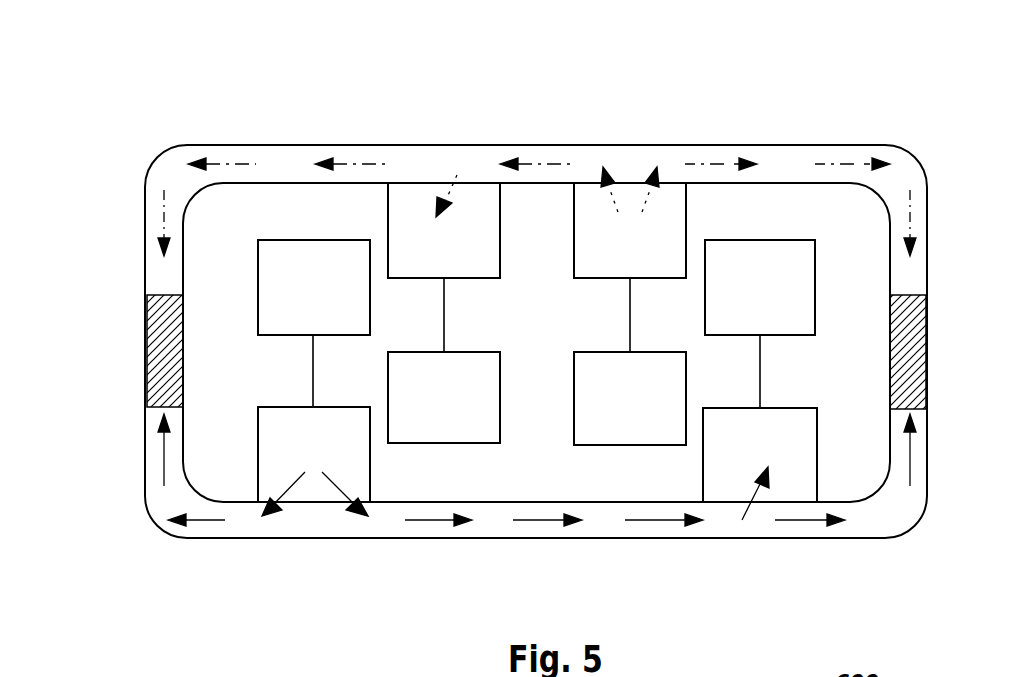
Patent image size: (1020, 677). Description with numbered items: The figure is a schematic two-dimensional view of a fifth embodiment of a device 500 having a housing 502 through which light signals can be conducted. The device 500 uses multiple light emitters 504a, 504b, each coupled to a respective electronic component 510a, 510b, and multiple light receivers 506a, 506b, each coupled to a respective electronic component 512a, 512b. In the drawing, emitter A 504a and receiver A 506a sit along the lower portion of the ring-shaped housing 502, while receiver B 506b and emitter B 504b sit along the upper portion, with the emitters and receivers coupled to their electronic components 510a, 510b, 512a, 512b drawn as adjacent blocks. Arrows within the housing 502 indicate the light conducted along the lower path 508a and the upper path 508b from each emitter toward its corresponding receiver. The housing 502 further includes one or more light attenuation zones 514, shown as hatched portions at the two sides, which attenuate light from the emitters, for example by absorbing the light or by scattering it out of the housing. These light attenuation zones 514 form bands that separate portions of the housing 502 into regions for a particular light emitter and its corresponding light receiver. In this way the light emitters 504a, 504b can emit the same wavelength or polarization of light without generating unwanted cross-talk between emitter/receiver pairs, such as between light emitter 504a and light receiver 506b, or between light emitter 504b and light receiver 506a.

The device 500 is at (805, 98).
The housing 502 is at (762, 145).
The light emitter 504a is at (325, 502).
The light emitter 504b is at (633, 183).
The light receiver 506a is at (730, 502).
The light receiver 506b is at (455, 166).
The lower conveying path 508a is at (440, 520).
The upper conveying path 508b is at (386, 165).
The electronic component 510a is at (313, 240).
The electronic component 510b is at (573, 445).
The electronic component 512a is at (815, 322).
The electronic component 512b is at (498, 346).
The light attenuation zone 514 is at (147, 378).